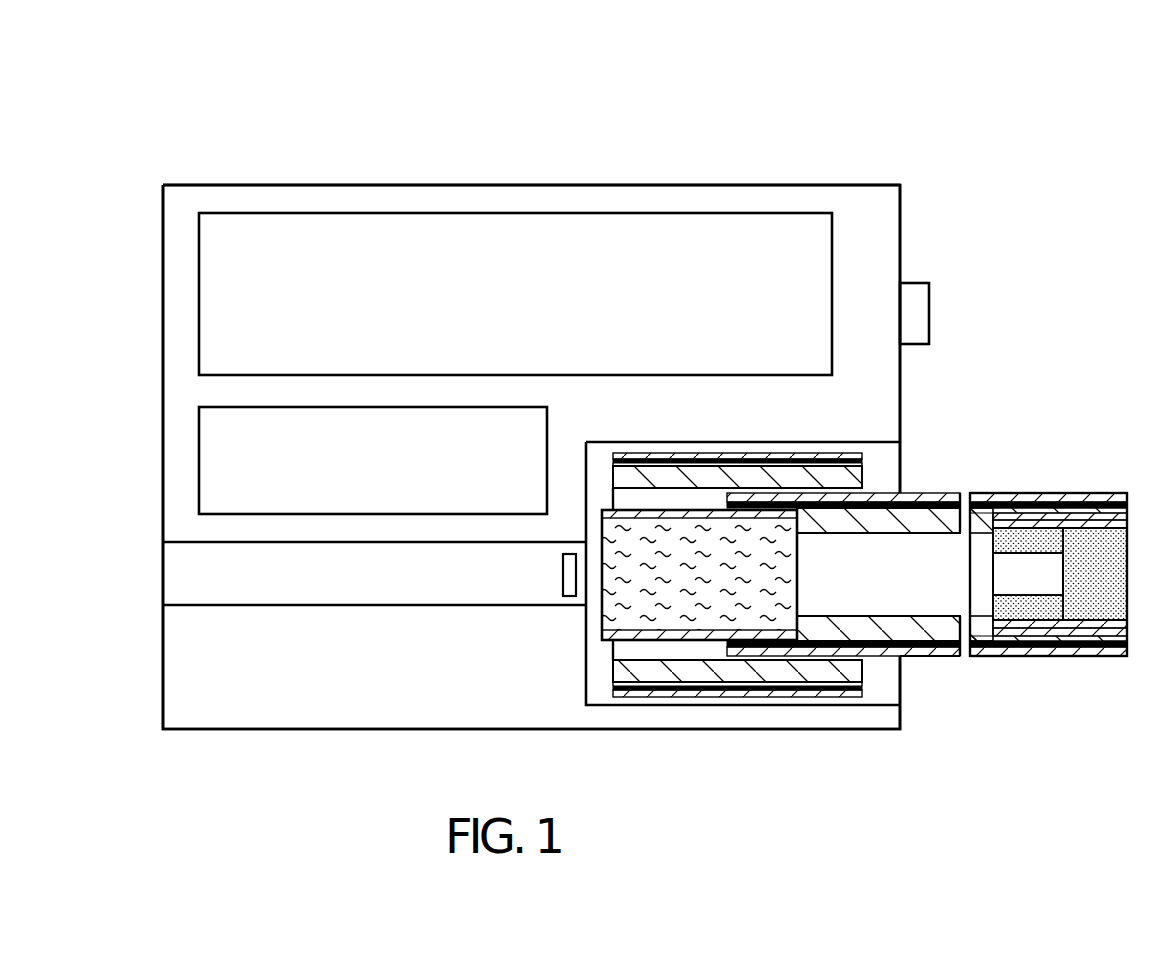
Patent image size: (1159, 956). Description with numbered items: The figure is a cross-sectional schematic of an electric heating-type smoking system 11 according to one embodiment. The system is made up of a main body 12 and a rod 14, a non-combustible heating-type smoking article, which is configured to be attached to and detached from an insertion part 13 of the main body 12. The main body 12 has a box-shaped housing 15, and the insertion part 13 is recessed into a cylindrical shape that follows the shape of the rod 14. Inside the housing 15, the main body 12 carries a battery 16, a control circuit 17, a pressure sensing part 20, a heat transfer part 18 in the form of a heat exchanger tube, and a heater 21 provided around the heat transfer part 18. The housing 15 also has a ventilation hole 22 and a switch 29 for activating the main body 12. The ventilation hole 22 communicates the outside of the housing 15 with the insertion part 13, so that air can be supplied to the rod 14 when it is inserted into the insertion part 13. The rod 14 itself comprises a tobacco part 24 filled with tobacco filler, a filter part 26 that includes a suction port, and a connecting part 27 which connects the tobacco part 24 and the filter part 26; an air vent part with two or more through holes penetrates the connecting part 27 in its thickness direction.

The electric heating-type smoking system 11 is at (726, 112).
The main body 12 is at (539, 185).
The insertion part 13 is at (882, 471).
The rod 14 is at (993, 481).
The housing 15 is at (833, 185).
The battery 16 is at (833, 258).
The control circuit 17 is at (548, 420).
The heat transfer part 18 is at (742, 480).
The pressure sensing part 20 is at (563, 574).
The heater 21 is at (810, 458).
The ventilation hole 22 is at (190, 574).
The tobacco part 24 is at (665, 507).
The filter part 26 is at (1068, 499).
The connecting part 27 is at (939, 663).
The switch 29 is at (930, 313).